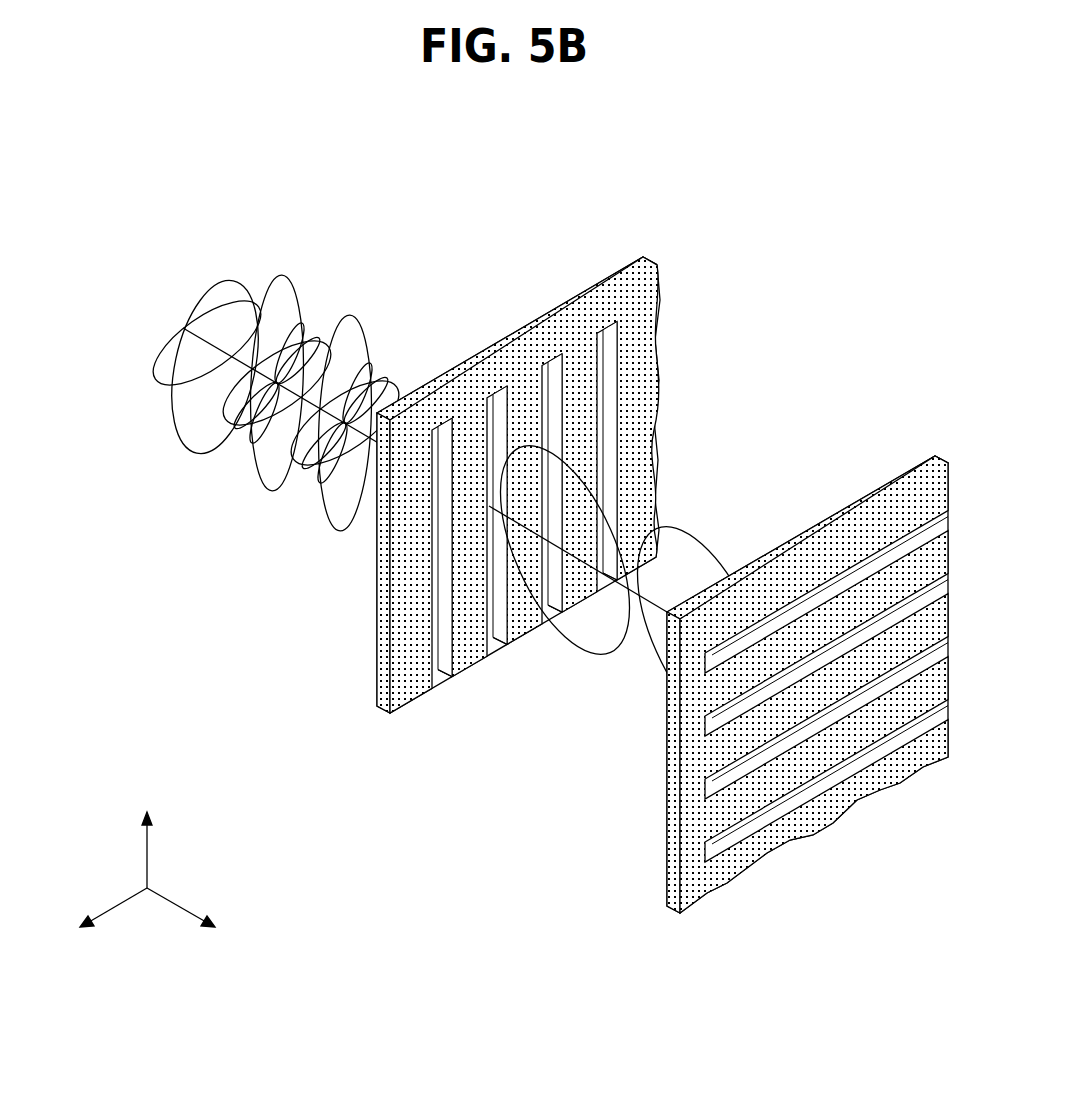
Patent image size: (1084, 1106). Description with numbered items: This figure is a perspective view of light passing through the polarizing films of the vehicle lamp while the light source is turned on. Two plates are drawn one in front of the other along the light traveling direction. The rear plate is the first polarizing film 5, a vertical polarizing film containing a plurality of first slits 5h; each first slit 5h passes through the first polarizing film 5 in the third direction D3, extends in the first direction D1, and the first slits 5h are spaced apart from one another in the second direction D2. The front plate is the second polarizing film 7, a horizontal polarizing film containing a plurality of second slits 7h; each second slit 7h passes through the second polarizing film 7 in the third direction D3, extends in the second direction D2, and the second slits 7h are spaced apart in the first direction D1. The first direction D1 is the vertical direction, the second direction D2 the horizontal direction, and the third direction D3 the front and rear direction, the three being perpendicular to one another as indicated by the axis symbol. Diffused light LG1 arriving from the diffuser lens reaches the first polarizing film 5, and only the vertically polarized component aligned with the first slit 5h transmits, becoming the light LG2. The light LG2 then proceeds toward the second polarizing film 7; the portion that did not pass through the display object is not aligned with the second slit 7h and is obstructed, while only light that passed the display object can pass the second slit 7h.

The light LG1 is at (293, 280).
The light LG2 is at (672, 532).
The first polarizing film 5 is at (381, 628).
The first slit 5h is at (436, 662).
The second polarizing film 7 is at (668, 815).
The second slit 7h is at (745, 832).
The first direction D1 is at (146, 836).
The second direction D2 is at (97, 921).
The third direction D3 is at (198, 921).